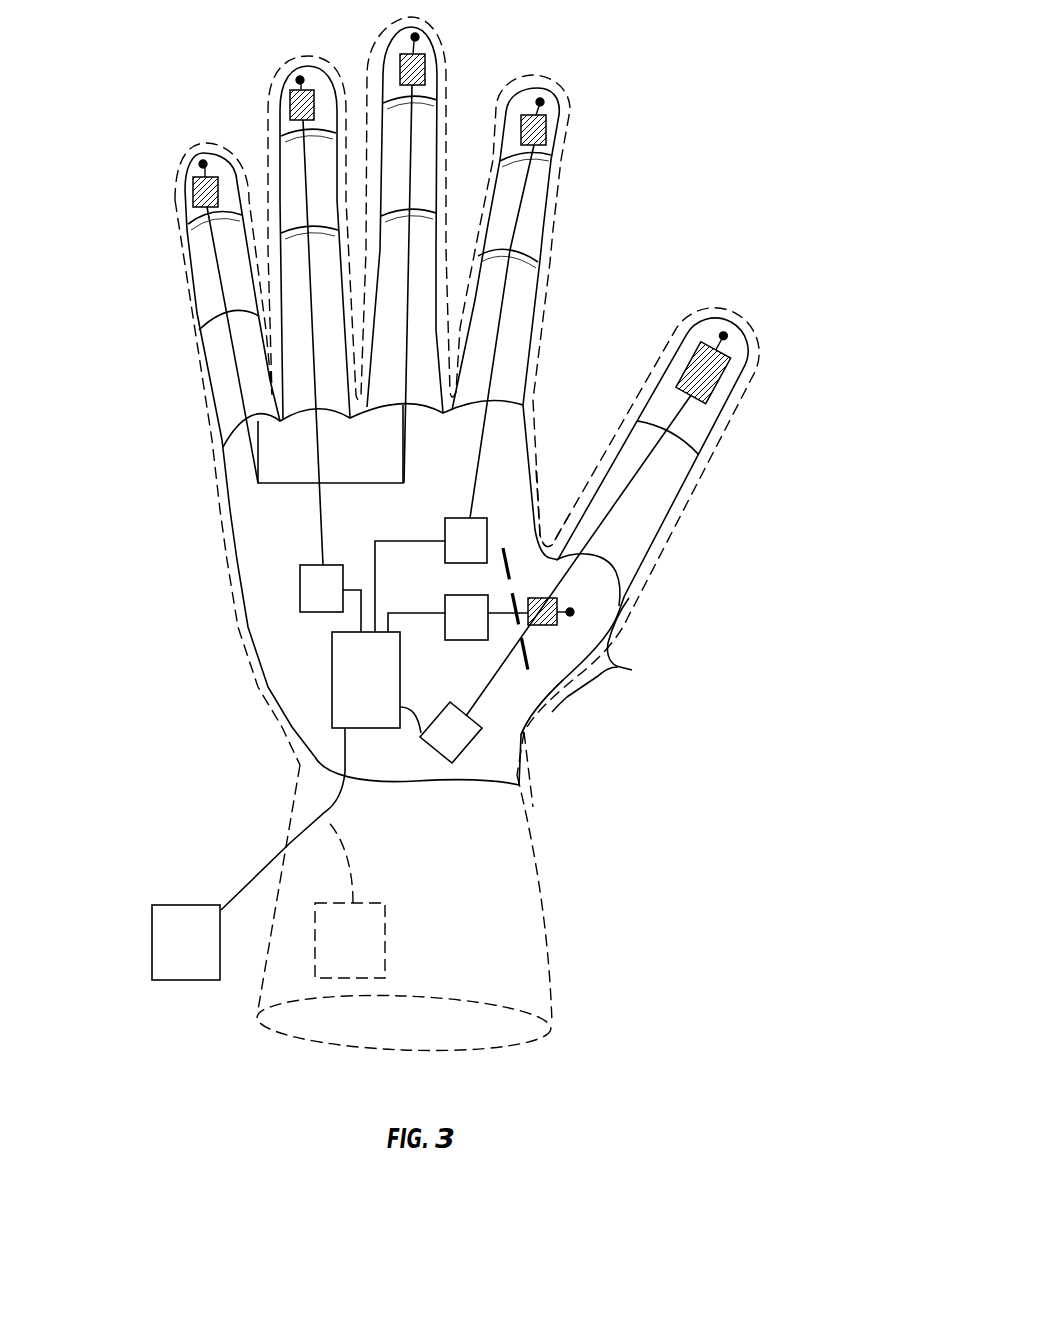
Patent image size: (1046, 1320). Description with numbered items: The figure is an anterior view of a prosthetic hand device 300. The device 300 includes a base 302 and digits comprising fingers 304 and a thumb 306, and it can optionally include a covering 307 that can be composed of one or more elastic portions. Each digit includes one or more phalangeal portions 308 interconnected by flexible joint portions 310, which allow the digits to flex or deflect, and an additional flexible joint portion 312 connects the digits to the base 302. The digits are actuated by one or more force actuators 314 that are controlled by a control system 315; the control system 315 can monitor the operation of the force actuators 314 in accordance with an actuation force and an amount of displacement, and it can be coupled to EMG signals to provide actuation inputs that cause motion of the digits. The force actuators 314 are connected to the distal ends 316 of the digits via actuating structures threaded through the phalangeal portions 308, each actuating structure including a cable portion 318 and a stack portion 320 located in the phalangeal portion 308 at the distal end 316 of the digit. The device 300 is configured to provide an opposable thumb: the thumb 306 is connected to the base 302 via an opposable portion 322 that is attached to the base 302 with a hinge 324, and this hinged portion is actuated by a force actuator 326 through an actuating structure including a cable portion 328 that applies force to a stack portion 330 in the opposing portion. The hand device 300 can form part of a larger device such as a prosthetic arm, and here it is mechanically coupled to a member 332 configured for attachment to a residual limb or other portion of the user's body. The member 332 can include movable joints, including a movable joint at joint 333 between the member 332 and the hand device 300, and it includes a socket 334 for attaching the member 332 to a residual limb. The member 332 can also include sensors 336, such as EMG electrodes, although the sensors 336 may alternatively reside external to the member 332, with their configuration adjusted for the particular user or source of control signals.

The prosthetic hand device 300 is at (687, 890).
The base 302 is at (273, 690).
The fingers 304 is at (556, 413).
The thumb 306 is at (744, 433).
The covering 307 is at (539, 80).
The phalangeal portions 308 is at (172, 198).
The flexible joint portions 310 is at (187, 226).
The flexible joint portion 312 is at (222, 447).
The force actuators 314 is at (294, 603).
The control system 315 is at (328, 710).
The distal ends 316 is at (212, 148).
The cable portion 318 is at (312, 505).
The stack portion 320 is at (190, 181).
The opposable portion 322 is at (632, 670).
The hinge 324 is at (539, 716).
The force actuator 326 is at (546, 536).
The cable portion 328 is at (533, 711).
The stack portion 330 is at (564, 593).
The member 332 is at (551, 957).
The joint 333 is at (456, 786).
The socket 334 is at (517, 1048).
The sensors 336 is at (203, 957).